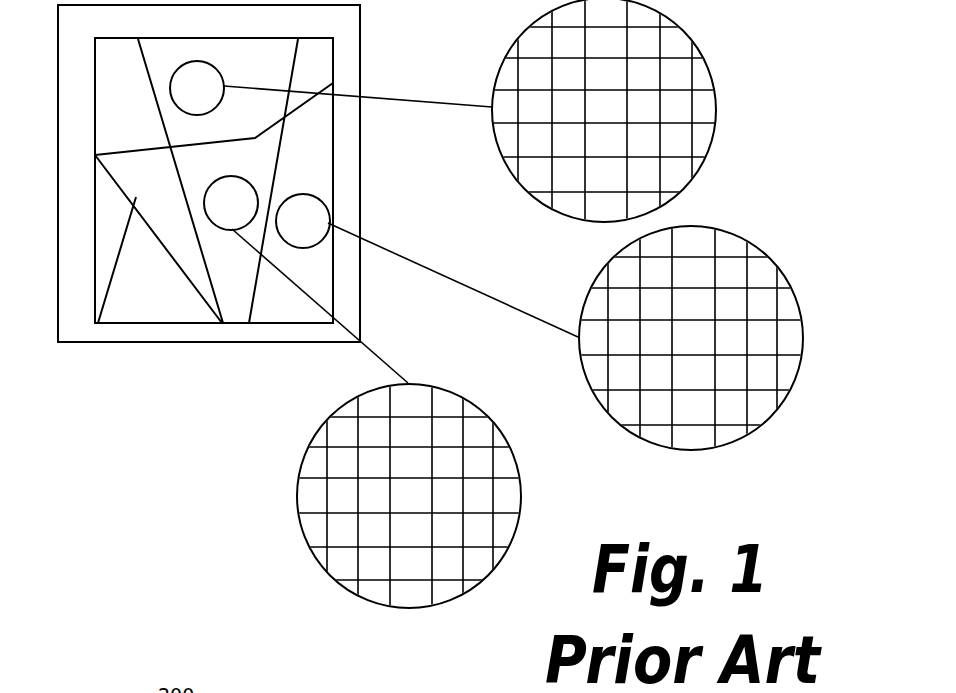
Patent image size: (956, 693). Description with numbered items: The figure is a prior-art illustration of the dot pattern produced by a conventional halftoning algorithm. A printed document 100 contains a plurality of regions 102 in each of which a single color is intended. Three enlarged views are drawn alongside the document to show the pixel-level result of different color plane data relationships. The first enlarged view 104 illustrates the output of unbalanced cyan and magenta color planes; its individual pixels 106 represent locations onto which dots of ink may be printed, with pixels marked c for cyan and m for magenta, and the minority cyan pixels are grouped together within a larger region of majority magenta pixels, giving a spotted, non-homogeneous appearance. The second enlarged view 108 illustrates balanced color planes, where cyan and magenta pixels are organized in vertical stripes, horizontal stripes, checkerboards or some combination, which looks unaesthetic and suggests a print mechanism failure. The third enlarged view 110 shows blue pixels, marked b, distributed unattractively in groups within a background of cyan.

The printed document 100 is at (208, 342).
The regions 102 is at (303, 168).
The first enlarged view 104 is at (585, 338).
The individual pixels 106 is at (617, 300).
The second enlarged view 108 is at (717, 72).
The third enlarged view 110 is at (450, 392).